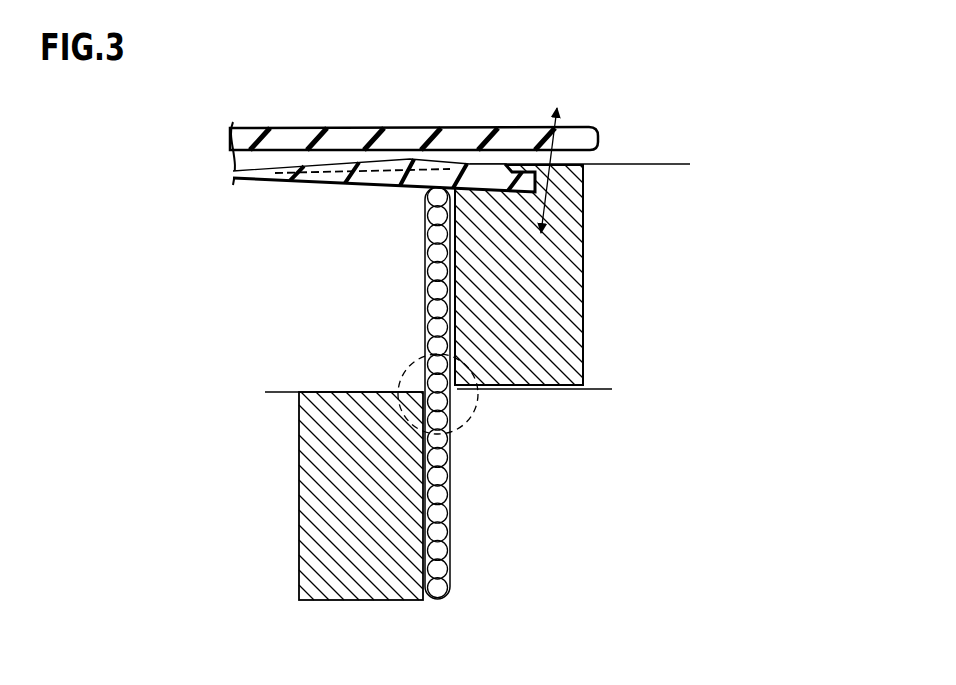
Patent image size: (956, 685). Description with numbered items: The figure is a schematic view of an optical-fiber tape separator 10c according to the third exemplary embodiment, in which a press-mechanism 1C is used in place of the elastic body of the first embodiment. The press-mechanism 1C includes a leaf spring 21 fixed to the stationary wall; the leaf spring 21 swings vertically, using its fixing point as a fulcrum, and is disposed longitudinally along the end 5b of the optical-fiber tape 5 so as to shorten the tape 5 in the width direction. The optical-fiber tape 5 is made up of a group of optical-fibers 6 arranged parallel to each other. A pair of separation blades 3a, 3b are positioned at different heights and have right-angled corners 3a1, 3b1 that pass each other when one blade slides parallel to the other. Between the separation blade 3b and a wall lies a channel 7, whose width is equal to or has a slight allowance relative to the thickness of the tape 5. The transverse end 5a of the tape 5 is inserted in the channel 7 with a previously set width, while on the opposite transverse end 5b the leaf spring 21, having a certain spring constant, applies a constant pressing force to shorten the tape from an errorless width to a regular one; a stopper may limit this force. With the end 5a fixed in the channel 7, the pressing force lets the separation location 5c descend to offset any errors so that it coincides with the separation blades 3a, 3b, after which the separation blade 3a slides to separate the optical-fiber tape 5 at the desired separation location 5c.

The optical-fiber tape separator 10c is at (705, 97).
The press-mechanism 1C is at (585, 98).
The leaf spring 21 is at (370, 186).
The separation blade 3a is at (572, 312).
The right-angled corner 3a1 is at (473, 390).
The separation blade 3b is at (305, 545).
The right-angled corner 3b1 is at (411, 392).
The optical-fiber tape 5 is at (424, 302).
The transverse end 5a is at (440, 600).
The transverse end 5b is at (425, 189).
The separation location 5c is at (452, 410).
The optical-fibers 6 is at (446, 553).
The channel 7 is at (417, 377).